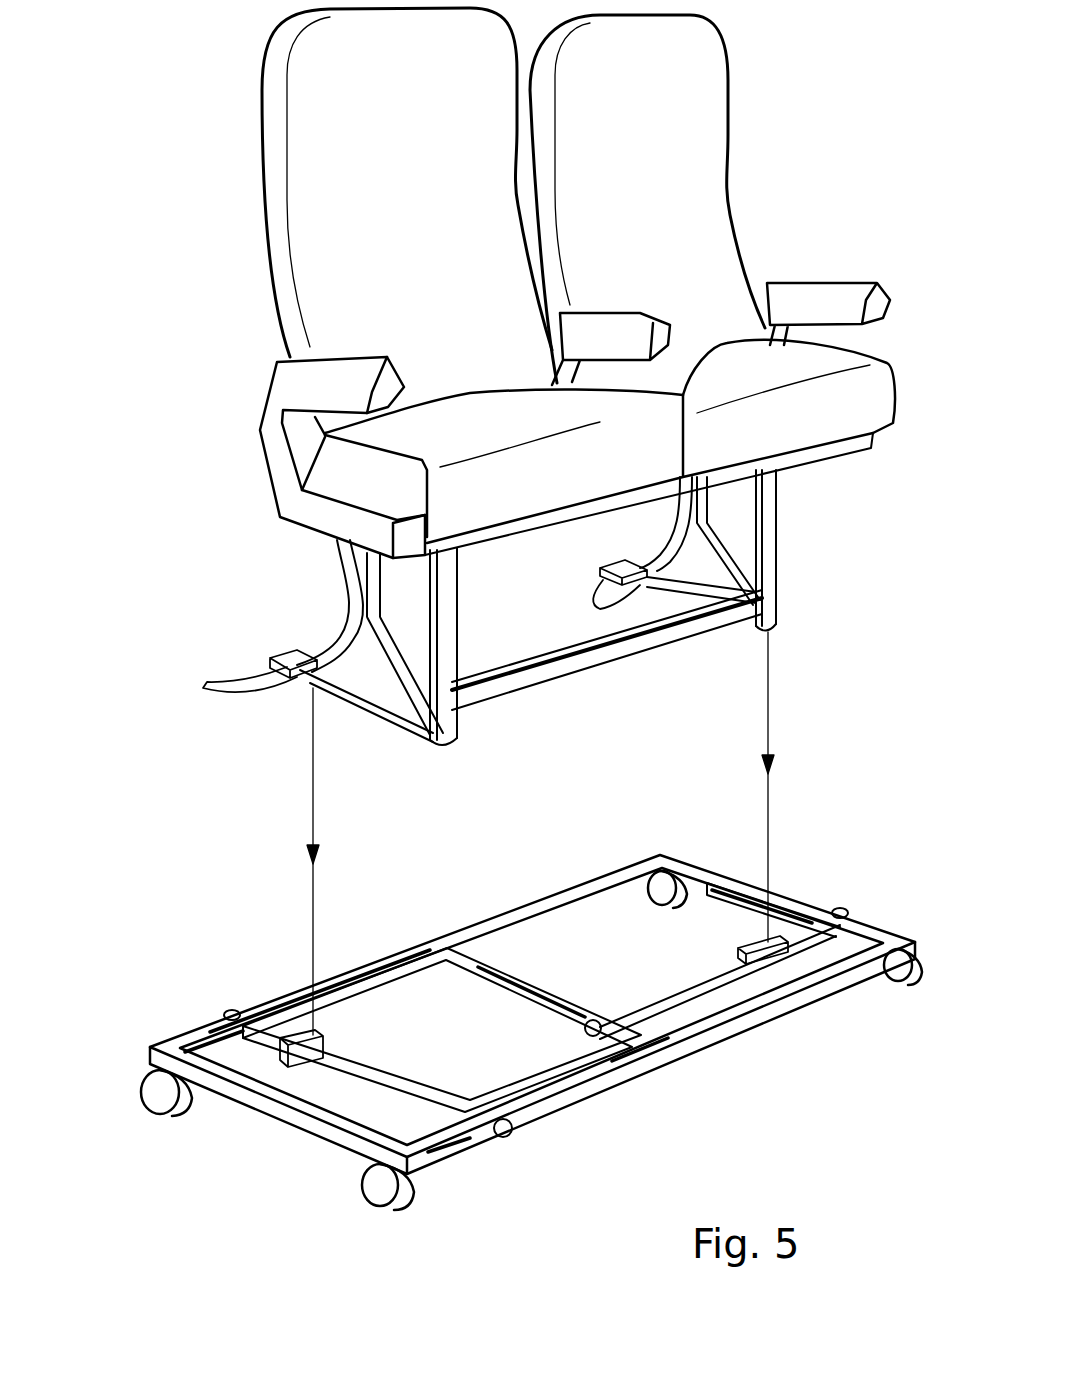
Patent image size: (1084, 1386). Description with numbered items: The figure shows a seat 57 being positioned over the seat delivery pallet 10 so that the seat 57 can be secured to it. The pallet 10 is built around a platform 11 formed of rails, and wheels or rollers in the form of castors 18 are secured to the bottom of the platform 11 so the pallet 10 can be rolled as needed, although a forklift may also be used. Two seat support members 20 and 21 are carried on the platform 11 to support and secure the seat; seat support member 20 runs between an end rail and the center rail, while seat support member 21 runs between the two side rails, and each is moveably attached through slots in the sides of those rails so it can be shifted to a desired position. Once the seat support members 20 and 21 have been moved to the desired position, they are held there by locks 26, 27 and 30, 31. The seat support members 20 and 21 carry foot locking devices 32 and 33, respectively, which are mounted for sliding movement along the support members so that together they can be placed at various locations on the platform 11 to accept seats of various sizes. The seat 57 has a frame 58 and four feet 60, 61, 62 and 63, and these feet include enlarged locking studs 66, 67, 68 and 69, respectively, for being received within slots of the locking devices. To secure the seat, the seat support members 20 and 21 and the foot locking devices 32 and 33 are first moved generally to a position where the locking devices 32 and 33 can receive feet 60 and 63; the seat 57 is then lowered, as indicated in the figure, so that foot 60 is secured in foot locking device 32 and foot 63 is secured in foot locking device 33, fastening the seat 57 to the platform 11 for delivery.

The seat delivery pallet 10 is at (495, 1033).
The platform 11 is at (720, 1052).
The castors 18 is at (664, 890).
The seat support member 20 is at (797, 905).
The seat support member 21 is at (460, 1157).
The lock 26 is at (842, 911).
The lock 27 is at (586, 1034).
The lock 30 is at (508, 1138).
The lock 31 is at (230, 1010).
The foot locking device 32 is at (768, 965).
The foot locking device 33 is at (312, 1055).
The seat 57 is at (258, 207).
The frame 58 is at (795, 533).
The foot 60 is at (797, 610).
The foot 61 is at (590, 556).
The foot 62 is at (417, 749).
The foot 63 is at (283, 640).
The enlarged locking stud 66 is at (782, 630).
The enlarged locking stud 67 is at (622, 585).
The enlarged locking stud 68 is at (457, 742).
The enlarged locking stud 69 is at (210, 688).